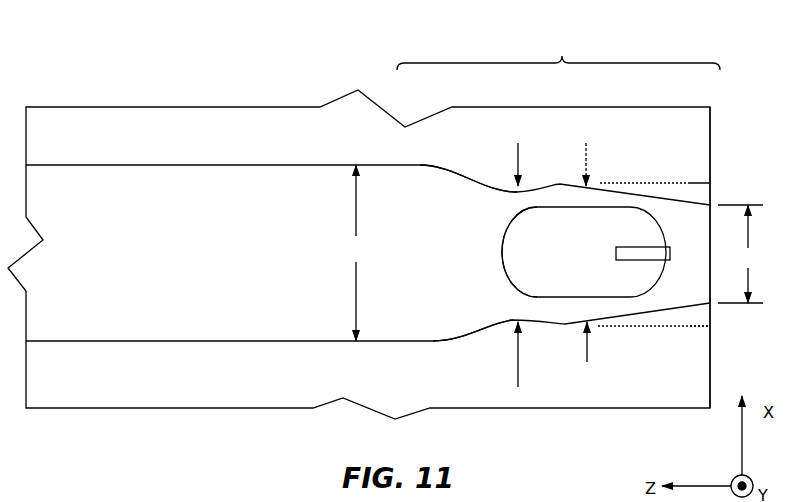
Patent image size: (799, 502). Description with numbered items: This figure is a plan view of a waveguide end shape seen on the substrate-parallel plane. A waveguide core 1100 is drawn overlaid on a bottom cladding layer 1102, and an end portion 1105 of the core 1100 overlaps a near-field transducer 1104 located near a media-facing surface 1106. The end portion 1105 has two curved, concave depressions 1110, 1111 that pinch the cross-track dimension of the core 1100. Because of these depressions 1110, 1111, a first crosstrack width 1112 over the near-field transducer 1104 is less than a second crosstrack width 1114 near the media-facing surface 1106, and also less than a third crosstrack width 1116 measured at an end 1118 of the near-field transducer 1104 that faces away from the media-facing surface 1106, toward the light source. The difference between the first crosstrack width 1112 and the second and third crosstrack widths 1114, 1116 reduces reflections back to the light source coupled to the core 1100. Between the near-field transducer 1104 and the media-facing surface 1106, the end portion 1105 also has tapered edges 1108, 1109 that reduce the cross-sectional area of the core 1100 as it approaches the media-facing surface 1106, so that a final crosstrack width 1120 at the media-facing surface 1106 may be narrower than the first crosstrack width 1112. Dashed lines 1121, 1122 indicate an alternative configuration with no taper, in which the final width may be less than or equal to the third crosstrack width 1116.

The waveguide core 1100 is at (182, 182).
The bottom cladding layer 1102 is at (265, 122).
The near-field transducer 1104 is at (586, 252).
The end portion 1105 is at (558, 48).
The media-facing surface 1106 is at (710, 134).
The tapered edge 1108 is at (628, 183).
The tapered edge 1109 is at (663, 312).
The depression 1110 is at (498, 187).
The depression 1111 is at (493, 323).
The first crosstrack width 1112 is at (518, 387).
The second crosstrack width 1114 is at (587, 362).
The third crosstrack width 1116 is at (356, 253).
The end of the near-field transducer 1118 is at (502, 247).
The final crosstrack width 1120 is at (742, 254).
The dashed line 1121 is at (697, 328).
The dashed line 1122 is at (690, 185).